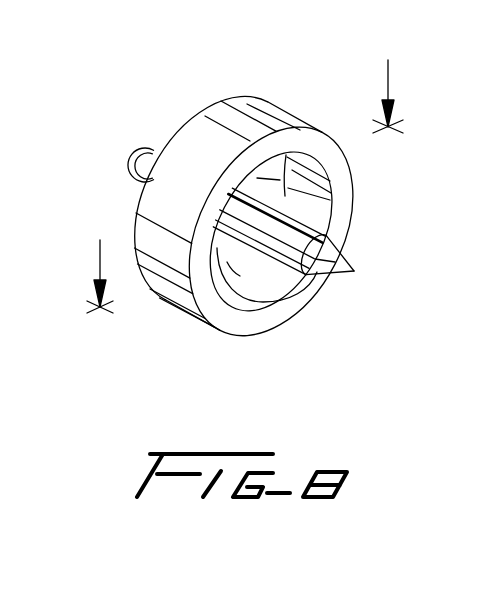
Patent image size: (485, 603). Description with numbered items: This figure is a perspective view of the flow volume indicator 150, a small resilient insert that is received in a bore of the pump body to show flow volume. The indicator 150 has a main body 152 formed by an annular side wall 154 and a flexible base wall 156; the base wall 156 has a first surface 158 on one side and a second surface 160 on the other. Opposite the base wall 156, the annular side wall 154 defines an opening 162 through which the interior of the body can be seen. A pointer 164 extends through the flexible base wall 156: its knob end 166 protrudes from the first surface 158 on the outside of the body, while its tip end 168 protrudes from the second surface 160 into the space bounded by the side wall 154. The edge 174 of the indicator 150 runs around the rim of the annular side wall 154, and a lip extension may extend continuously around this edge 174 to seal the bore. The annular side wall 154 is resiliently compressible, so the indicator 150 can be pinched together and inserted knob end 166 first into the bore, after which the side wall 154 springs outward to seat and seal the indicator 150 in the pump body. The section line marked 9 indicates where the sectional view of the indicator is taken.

The flow volume indicator 150 is at (84, 189).
The main body 152 is at (233, 108).
The annular side wall 154 is at (254, 102).
The flexible base wall 156 is at (173, 130).
The first surface 158 is at (197, 112).
The second surface 160 is at (336, 199).
The opening 162 is at (277, 283).
The pointer 164 is at (332, 232).
The knob end 166 is at (133, 153).
The tip end 168 is at (339, 279).
The edge 174 is at (272, 132).
The section line 9- 9 is at (244, 186).